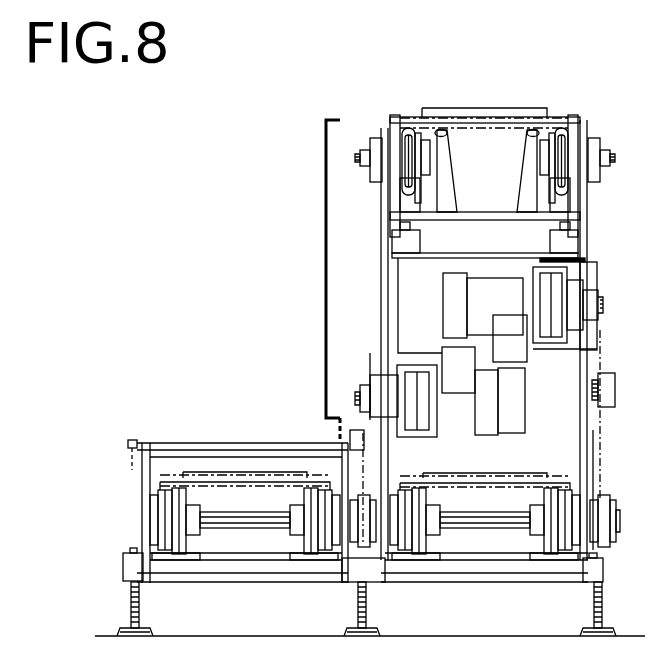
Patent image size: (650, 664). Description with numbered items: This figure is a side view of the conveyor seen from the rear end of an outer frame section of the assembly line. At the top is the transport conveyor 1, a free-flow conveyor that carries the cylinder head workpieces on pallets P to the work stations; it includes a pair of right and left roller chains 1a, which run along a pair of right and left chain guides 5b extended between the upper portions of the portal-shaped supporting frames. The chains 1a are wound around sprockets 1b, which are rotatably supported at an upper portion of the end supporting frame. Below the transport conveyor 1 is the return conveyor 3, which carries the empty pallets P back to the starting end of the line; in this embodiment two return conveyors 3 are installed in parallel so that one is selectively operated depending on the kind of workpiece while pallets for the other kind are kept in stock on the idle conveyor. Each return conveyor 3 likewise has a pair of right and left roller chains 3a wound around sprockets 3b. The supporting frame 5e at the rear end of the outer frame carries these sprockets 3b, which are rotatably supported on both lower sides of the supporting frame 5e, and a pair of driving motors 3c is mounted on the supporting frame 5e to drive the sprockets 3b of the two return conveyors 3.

The transport conveyor 1 is at (481, 104).
The roller chain 1a is at (408, 128).
The sprocket 1b is at (399, 178).
The return conveyor 3 is at (220, 470).
The roller chain 3a is at (545, 492).
The sprocket 3b is at (185, 540).
The driving motor 3c is at (505, 392).
The chain guide 5b is at (408, 248).
The supporting frame 5e is at (390, 247).
The pallet P is at (507, 118).